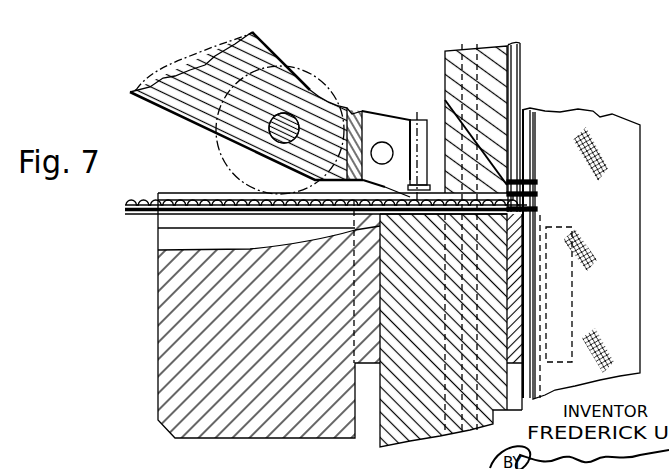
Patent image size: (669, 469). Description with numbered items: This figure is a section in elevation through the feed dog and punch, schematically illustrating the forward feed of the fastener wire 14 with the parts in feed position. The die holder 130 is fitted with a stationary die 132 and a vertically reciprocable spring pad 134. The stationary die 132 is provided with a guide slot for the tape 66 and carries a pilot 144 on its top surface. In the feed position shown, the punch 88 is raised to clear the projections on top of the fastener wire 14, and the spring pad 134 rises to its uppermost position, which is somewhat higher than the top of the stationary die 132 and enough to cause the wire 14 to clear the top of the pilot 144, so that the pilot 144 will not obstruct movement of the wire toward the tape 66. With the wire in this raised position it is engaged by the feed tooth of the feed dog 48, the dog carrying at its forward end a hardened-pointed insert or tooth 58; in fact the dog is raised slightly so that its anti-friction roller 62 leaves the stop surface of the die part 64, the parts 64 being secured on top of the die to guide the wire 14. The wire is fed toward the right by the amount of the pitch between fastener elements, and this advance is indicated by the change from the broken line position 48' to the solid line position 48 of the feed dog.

The fastener wire 14 is at (137, 207).
The feed dog 48 is at (246, 96).
The feed dog broken line position 48' is at (194, 58).
The insert or tooth 58 is at (417, 134).
The anti-friction roller 62 is at (312, 65).
The part of the die 64 is at (165, 193).
The tape 66 is at (594, 118).
The punch 88 is at (513, 78).
The die holder 130 is at (175, 382).
The stationary die 132 is at (514, 286).
The spring pad 134 is at (425, 425).
The pilot 144 is at (519, 216).